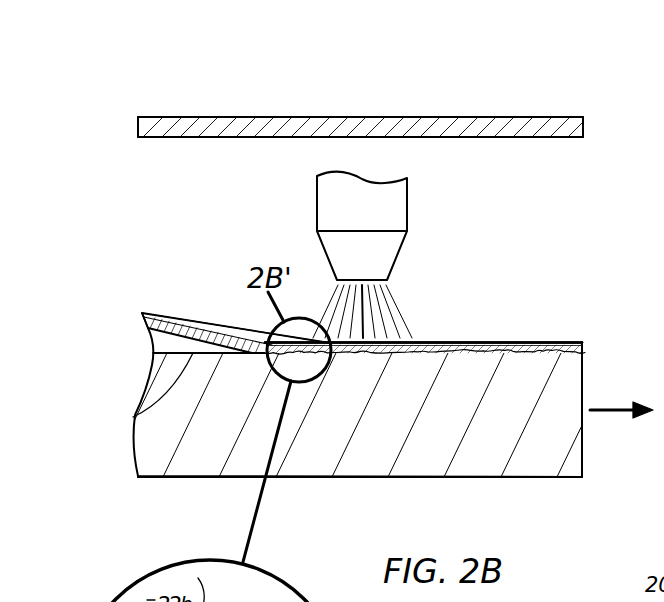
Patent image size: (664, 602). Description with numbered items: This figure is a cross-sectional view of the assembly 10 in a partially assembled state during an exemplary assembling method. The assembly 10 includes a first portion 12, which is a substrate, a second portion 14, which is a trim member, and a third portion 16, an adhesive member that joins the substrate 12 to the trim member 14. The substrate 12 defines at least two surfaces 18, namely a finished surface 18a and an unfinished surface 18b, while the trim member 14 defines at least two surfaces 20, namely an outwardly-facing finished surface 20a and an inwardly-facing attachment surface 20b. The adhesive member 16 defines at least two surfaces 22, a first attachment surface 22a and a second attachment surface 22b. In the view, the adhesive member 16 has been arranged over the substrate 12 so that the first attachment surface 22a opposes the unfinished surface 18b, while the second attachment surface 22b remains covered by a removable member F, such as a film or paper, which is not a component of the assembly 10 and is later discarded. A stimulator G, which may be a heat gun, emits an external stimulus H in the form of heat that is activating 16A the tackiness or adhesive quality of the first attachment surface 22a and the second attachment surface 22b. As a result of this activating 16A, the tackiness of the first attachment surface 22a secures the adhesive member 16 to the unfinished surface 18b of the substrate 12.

The assembly 10 is at (62, 192).
The first portion 12 is at (128, 389).
The second portion 14 is at (133, 128).
The third portion 16 is at (139, 321).
The activating 16A is at (495, 346).
The surfaces 18 is at (76, 408).
The finished surface 18a is at (138, 475).
The unfinished surface 18b is at (134, 420).
The surfaces 20 is at (98, 23).
The outwardly-facing finished surface 20a is at (173, 116).
The inwardly-facing attachment surface 20b is at (250, 142).
The surfaces 22 is at (215, 193).
The first attachment surface 22a is at (179, 340).
The second attachment surface 22b is at (152, 318).
The stimulator G is at (417, 211).
The external stimulus H is at (401, 306).
The removable member F is at (538, 341).